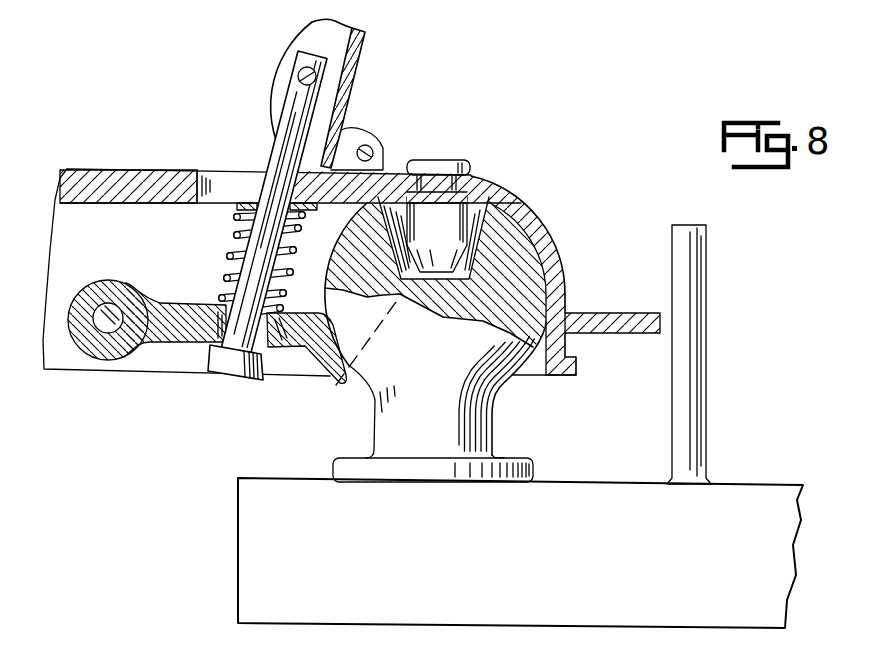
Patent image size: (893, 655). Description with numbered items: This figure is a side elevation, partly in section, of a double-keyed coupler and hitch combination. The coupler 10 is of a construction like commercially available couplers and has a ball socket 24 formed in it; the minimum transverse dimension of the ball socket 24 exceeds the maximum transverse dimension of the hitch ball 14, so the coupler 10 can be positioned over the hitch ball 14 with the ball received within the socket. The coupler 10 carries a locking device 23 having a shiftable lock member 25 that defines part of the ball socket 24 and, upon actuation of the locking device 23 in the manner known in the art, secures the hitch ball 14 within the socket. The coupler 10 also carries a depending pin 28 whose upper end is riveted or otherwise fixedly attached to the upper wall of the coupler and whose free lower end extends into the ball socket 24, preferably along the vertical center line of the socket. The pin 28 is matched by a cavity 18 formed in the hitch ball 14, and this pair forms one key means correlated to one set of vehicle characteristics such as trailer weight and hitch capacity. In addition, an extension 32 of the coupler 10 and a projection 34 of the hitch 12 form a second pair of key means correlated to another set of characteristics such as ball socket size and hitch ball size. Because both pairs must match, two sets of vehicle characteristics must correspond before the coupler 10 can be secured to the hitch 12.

The coupler 10 is at (88, 172).
The hitch 12 is at (768, 500).
The hitch ball 14 is at (489, 423).
The cavity 18 is at (476, 228).
The locking device 23 is at (361, 38).
The ball socket 24 is at (537, 365).
The lock member 25 is at (340, 381).
The pin 28 is at (458, 210).
The extension 32 is at (629, 316).
The projection 34 is at (697, 367).